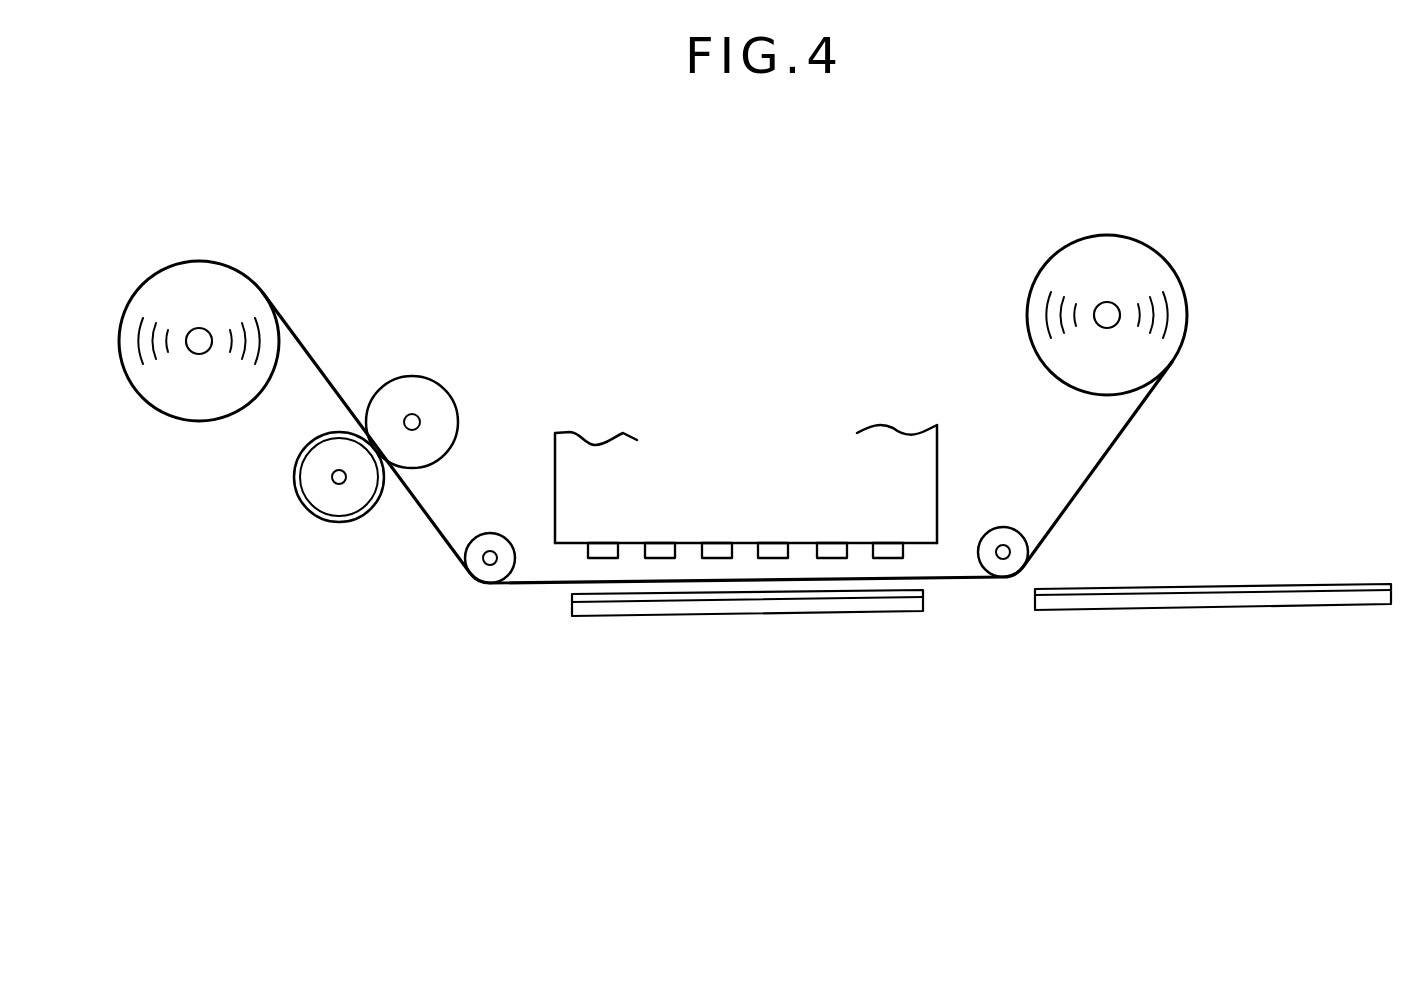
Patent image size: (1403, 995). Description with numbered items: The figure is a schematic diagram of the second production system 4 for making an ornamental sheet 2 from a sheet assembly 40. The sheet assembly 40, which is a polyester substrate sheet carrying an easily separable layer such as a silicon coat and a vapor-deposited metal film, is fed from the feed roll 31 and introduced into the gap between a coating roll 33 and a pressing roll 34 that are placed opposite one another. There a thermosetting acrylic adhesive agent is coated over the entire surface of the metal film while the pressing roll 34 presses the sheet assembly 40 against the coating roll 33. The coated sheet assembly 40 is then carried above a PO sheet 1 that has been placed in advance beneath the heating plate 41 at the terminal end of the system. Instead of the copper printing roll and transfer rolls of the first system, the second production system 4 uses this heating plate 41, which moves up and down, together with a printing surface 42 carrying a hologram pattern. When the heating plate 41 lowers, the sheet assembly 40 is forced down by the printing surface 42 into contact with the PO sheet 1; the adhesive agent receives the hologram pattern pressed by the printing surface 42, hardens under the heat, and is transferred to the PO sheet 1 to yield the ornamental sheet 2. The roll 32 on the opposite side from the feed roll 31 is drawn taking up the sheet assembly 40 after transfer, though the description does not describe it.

The PO sheet 1 is at (738, 605).
The ornamental sheet 2 is at (1209, 600).
The second production system 4 is at (554, 334).
The feed roll 31 is at (188, 283).
The take-up roll 32 is at (1157, 271).
The coating roll 33 is at (322, 497).
The pressing roll 34 is at (435, 403).
The sheet assembly 40 is at (322, 370).
The heating plate 41 is at (612, 452).
The printing surface 42 is at (588, 553).